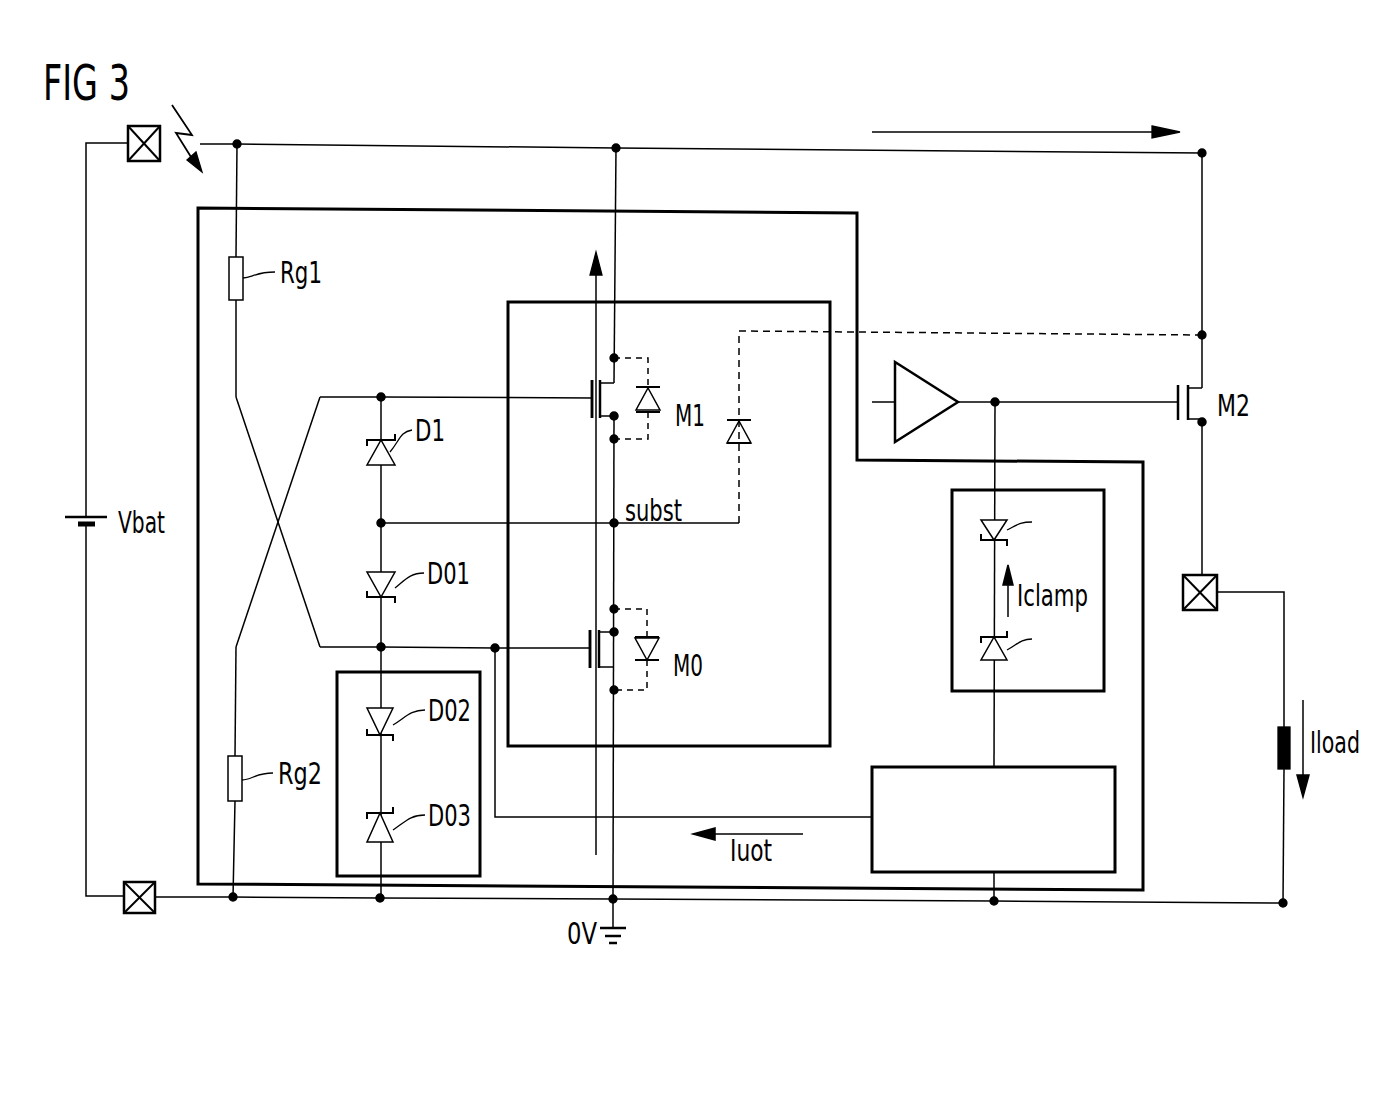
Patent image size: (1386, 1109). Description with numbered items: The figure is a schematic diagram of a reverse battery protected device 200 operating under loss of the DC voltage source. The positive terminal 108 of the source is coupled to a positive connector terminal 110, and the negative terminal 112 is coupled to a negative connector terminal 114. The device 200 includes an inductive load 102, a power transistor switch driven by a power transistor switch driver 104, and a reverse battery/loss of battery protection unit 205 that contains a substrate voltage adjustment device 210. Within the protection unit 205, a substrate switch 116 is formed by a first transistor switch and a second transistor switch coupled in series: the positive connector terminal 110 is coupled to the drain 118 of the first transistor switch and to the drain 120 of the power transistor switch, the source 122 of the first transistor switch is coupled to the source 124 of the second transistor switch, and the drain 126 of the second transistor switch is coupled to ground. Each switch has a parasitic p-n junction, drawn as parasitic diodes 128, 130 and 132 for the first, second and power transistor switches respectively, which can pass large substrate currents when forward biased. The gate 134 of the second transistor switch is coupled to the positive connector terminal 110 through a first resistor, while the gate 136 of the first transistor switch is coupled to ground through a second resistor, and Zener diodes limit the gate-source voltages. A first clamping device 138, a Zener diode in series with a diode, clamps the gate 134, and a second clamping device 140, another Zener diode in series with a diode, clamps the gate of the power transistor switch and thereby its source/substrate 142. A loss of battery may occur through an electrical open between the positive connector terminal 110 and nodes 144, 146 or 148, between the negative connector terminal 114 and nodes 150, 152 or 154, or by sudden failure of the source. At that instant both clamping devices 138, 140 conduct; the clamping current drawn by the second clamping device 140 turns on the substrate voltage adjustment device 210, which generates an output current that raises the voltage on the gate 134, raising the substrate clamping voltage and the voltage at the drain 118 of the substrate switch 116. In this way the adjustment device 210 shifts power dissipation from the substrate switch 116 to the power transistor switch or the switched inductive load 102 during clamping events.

The reverse battery protected device 200 is at (1285, 178).
The reverse battery/loss of battery protection unit 205 is at (857, 272).
The substrate voltage adjustment device 210 is at (935, 767).
The inductive load 102 is at (1276, 748).
The power transistor switch driver 104 is at (928, 380).
The positive terminal 108 is at (75, 515).
The positive connector terminal 110 is at (144, 161).
The negative terminal 112 is at (75, 528).
The negative connector terminal 114 is at (140, 882).
The substrate switch 116 is at (714, 302).
The drain of the first transistor switch 118 is at (618, 355).
The drain of the power transistor switch 120 is at (1206, 335).
The source of the first transistor switch 122 is at (618, 442).
The source of the second transistor switch 124 is at (618, 606).
The drain of the second transistor switch 126 is at (618, 693).
The parasitic diode 128 is at (660, 402).
The parasitic diode 130 is at (659, 645).
The parasitic diode 132 is at (751, 436).
The gate of the second transistor switch 134 is at (588, 640).
The gate of the first transistor switch 136 is at (590, 388).
The first clamping device 138 is at (337, 718).
The second clamping device 140 is at (952, 590).
The source/substrate of the power transistor switch 142 is at (1200, 610).
The node 144 is at (240, 148).
The node 146 is at (618, 152).
The node 148 is at (1199, 156).
The node 150 is at (234, 901).
The node 152 is at (683, 903).
The node 154 is at (1280, 900).